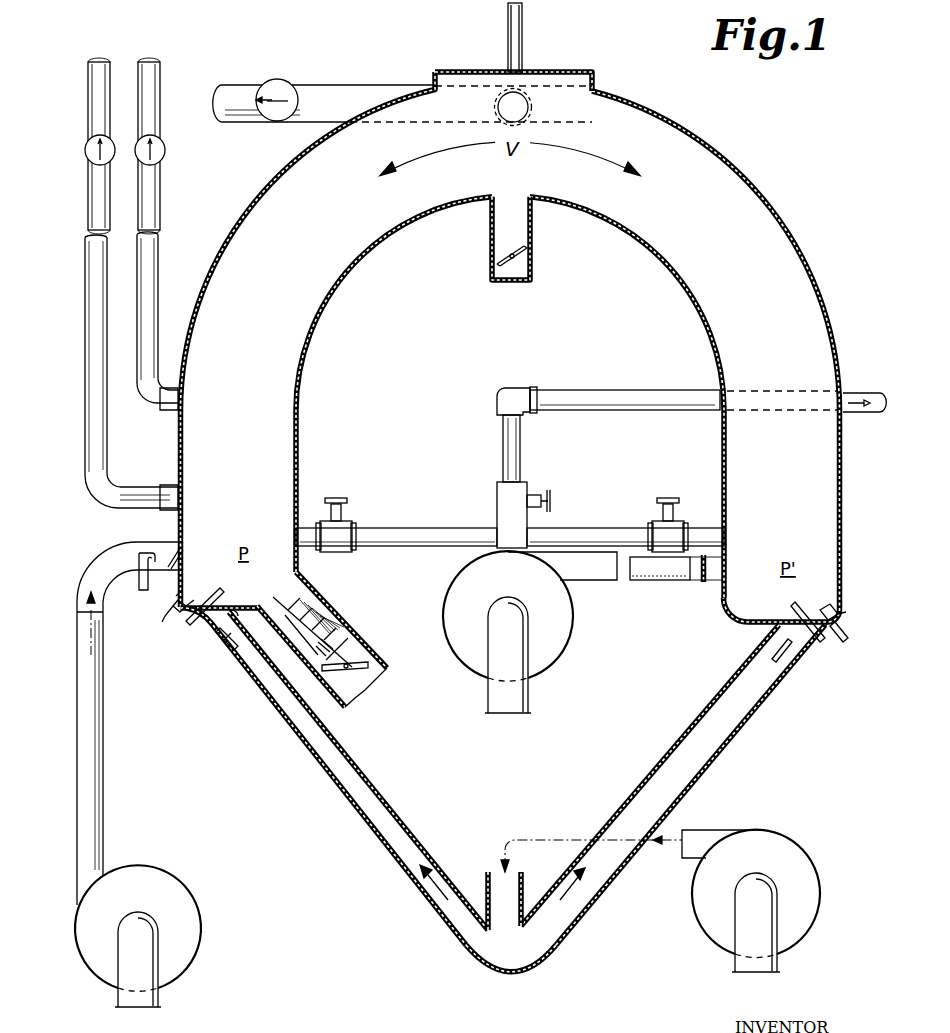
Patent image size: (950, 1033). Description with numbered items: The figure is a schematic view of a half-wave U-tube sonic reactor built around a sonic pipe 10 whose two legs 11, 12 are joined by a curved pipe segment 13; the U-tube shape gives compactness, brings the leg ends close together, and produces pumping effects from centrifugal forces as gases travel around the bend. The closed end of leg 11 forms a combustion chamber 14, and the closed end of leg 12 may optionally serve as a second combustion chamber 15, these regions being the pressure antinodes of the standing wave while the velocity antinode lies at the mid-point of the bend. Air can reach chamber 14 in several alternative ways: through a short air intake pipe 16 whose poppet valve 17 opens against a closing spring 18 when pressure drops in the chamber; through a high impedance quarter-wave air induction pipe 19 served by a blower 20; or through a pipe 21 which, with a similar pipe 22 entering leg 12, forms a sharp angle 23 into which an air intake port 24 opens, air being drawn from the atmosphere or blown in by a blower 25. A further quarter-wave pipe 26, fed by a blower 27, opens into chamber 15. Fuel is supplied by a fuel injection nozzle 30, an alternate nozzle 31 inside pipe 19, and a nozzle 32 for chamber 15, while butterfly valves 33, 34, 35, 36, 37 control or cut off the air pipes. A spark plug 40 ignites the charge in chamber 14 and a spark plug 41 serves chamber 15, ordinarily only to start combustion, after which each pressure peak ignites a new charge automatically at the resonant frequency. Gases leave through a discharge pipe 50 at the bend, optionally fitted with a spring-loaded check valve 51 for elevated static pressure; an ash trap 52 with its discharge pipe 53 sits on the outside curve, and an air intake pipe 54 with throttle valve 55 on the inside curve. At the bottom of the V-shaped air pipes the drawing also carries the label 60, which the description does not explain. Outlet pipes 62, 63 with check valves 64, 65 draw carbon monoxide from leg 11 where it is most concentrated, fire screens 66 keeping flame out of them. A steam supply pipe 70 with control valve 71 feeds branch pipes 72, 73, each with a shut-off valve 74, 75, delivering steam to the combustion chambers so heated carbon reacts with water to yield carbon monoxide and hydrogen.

The sonic pipe 10 is at (245, 209).
The leg 11 is at (300, 372).
The leg 12 is at (833, 512).
The curved pipe segment 13 is at (690, 126).
The combustion chamber 14 is at (280, 552).
The combustion chamber 15 is at (828, 604).
The air intake pipe 16 is at (340, 612).
The poppet valve 17 is at (300, 582).
The closing spring 18 is at (333, 645).
The air induction pipe 19 is at (108, 736).
The blower 20 is at (190, 912).
The pipe 21 is at (400, 858).
The pipe 22 is at (695, 772).
The sharp curve or angle 23 is at (505, 975).
The air intake opening or port 24 is at (520, 880).
The blower 25 is at (783, 945).
The pipe 26 is at (622, 582).
The blower 27 is at (550, 662).
The fuel injection nozzle 30 is at (222, 590).
The fuel injection nozzle 31 is at (145, 575).
The fuel injection nozzle 32 is at (796, 604).
The butterfly valve 33 is at (372, 664).
The butterfly valve 34 is at (183, 552).
The butterfly valve 35 is at (224, 650).
The butterfly valve 36 is at (786, 662).
The butterfly valve 37 is at (704, 585).
The spark plug 40 is at (168, 618).
The spark plug 41 is at (846, 642).
The discharge pipe 50 is at (350, 84).
The spring-loaded check valve 51 is at (292, 80).
The ash trap 52 is at (595, 78).
The discharge pipe 53 is at (524, 22).
The air intake pipe 54 is at (528, 251).
The throttle valve 55 is at (506, 281).
The liner 60 is at (498, 945).
The outlet pipe 62 is at (104, 405).
The outlet pipe 63 is at (158, 283).
The check valve 64 is at (110, 145).
The check valve 65 is at (166, 152).
The fire screen 66 is at (190, 492).
The steam supply pipe 70 is at (598, 390).
The control valve 71 is at (527, 490).
The branch pipe 72 is at (418, 530).
The branch pipe 73 is at (595, 532).
The control or shut-off valve 74 is at (352, 518).
The control or shut-off valve 75 is at (675, 515).